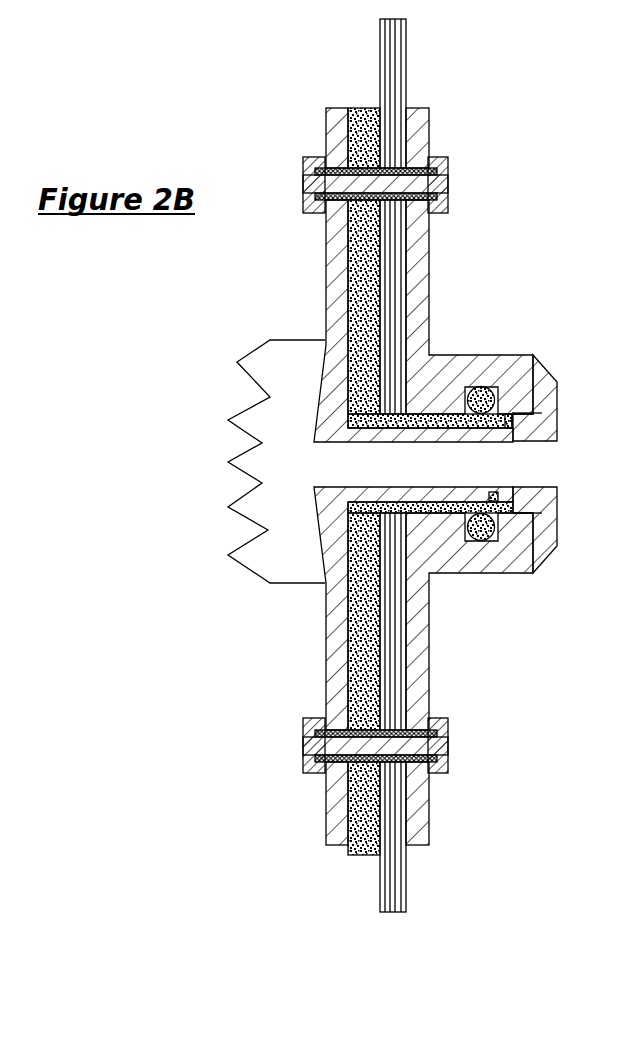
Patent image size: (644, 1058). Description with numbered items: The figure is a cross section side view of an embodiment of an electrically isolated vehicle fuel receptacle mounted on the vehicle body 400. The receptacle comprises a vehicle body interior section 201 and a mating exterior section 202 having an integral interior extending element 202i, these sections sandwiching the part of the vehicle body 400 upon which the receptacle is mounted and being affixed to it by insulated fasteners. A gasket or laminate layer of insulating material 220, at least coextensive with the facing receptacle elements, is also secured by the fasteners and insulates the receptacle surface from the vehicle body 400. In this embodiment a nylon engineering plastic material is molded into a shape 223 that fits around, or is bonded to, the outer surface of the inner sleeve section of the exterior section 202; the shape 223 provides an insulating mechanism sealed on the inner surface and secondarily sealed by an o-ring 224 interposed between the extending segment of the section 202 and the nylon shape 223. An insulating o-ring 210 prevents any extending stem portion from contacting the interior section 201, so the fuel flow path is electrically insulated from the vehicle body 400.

The vehicle body interior section 201 is at (423, 241).
The vehicle body exterior section 202 is at (335, 292).
The integral interior extending element 202i is at (458, 355).
The insulating o-ring 210 is at (486, 392).
The insulating material layer 220 is at (362, 108).
The nylon insulating shape 223 is at (512, 428).
The o-ring 224 is at (526, 441).
The vehicle body 400 is at (390, 895).